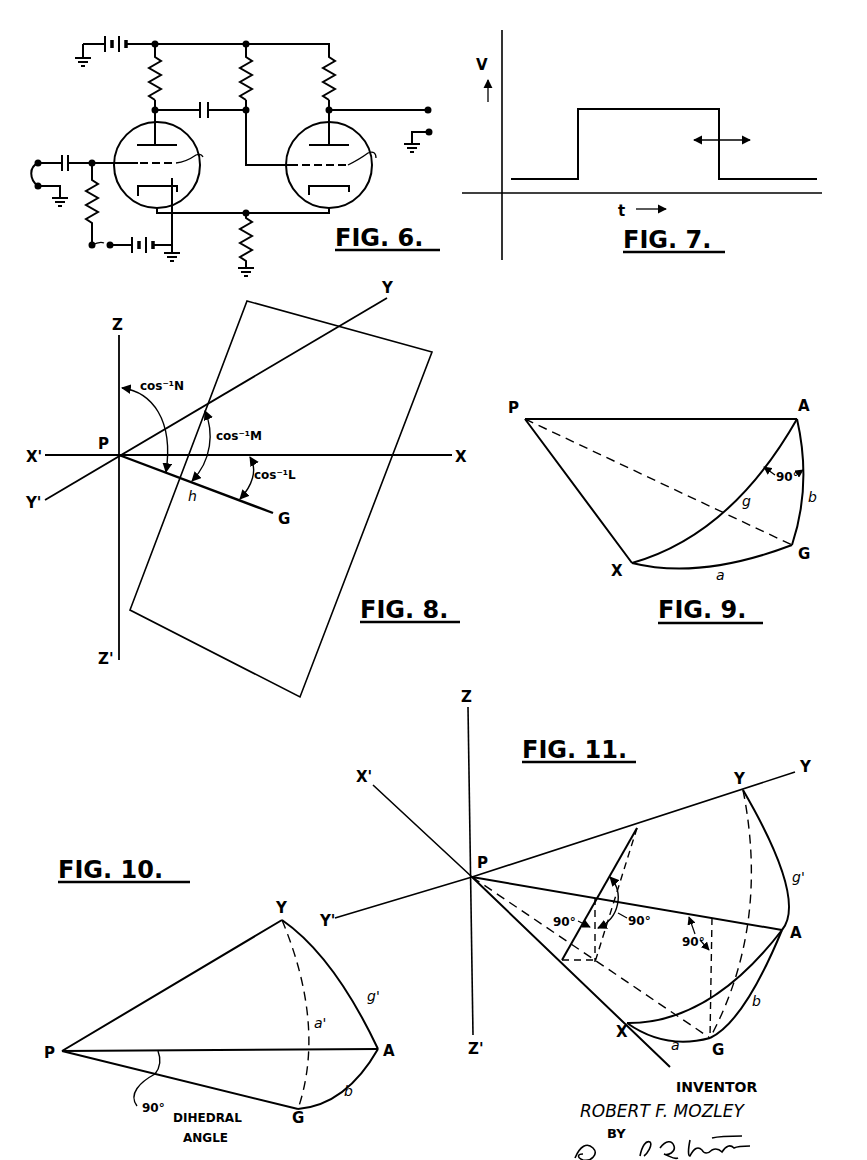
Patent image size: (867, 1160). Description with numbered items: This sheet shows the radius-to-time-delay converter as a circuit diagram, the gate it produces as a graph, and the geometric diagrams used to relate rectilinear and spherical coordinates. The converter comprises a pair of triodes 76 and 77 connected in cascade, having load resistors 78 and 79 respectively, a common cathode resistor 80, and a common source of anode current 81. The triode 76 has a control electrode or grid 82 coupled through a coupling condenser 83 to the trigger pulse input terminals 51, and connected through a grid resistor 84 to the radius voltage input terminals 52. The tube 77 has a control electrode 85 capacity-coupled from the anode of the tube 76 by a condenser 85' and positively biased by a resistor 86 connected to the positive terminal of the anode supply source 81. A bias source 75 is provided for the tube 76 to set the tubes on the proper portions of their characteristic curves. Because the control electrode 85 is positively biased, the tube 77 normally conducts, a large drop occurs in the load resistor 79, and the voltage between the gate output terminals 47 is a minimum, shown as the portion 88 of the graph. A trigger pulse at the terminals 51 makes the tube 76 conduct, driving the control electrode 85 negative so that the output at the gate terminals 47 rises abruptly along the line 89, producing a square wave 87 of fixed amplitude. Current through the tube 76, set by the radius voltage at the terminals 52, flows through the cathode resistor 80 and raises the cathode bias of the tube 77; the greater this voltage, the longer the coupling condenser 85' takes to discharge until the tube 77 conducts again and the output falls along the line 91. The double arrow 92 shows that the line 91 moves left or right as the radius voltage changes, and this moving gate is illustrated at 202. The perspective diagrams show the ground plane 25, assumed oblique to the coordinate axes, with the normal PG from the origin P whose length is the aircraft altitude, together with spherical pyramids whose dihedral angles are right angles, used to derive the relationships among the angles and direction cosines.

In FIG. 6, the common source of anode current 81 is at (124, 37).
In FIG. 6, the load resistor 78 is at (162, 79).
In FIG. 6, the condenser 85' is at (216, 100).
In FIG. 6, the resistor 86 is at (252, 79).
In FIG. 6, the load resistor 79 is at (336, 78).
In FIG. 6, the triode 76 is at (199, 191).
In FIG. 6, the triode 77 is at (373, 190).
In FIG. 6, the control electrode or grid 82 is at (162, 161).
In FIG. 6, the control electrode 85 is at (346, 164).
In FIG. 6, the gate output terminals 47 is at (432, 131).
In FIG. 6, the trigger pulse input terminals 51 is at (38, 188).
In FIG. 6, the coupling condenser 83 is at (90, 156).
In FIG. 6, the grid resistor 84 is at (96, 204).
In FIG. 6, the radius voltage input terminals 52 is at (90, 245).
In FIG. 6, the bias source 75 is at (150, 240).
In FIG. 6, the common cathode resistor 80 is at (252, 241).
In FIG. 7, the moving gate 202 is at (665, 135).
In FIG. 7, the square wave 87 is at (666, 108).
In FIG. 7, the line 89 is at (580, 148).
In FIG. 7, the line 91 is at (722, 124).
In FIG. 7, the double arrow 92 is at (722, 143).
In FIG. 7, the portion of the graph 88 is at (535, 178).
In FIG. 8, the ground plane 25 is at (250, 654).